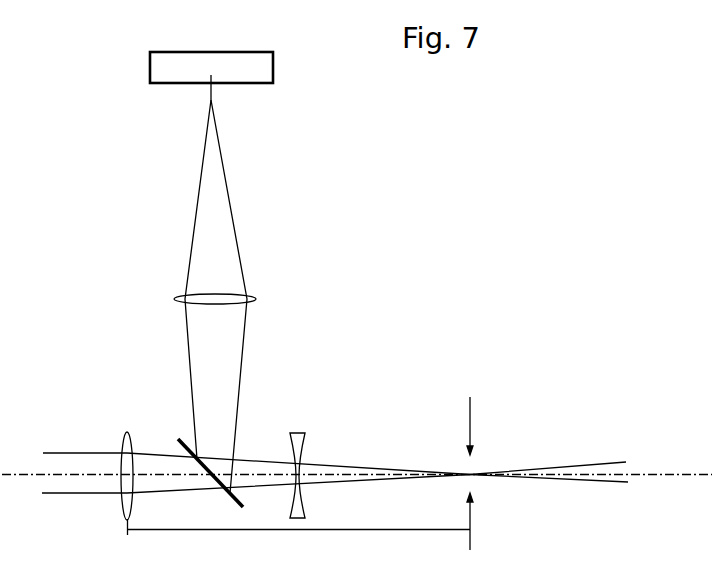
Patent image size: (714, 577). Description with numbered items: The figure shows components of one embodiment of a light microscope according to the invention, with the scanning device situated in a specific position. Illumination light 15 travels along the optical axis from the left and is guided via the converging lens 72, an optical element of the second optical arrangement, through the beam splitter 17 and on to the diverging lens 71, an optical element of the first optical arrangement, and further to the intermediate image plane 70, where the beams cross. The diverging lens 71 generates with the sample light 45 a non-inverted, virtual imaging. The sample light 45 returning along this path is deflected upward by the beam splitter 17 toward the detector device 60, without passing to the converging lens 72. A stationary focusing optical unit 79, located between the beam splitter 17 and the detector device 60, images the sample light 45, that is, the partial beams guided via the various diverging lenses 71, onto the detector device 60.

The detector device 60 is at (150, 68).
The sample light 45 is at (205, 228).
The stationary focusing optical unit 79 is at (174, 298).
The converging lens 72 is at (125, 432).
The illumination light 15 is at (78, 462).
The beam splitter 17 is at (177, 437).
The diverging lens 71 is at (300, 432).
The intermediate image plane 70 is at (483, 460).